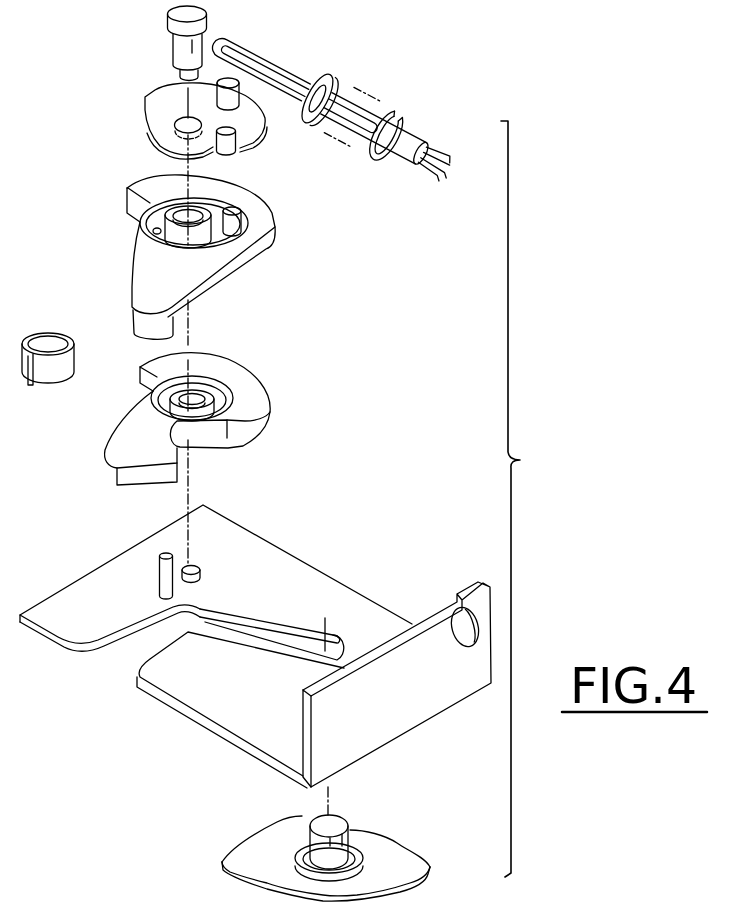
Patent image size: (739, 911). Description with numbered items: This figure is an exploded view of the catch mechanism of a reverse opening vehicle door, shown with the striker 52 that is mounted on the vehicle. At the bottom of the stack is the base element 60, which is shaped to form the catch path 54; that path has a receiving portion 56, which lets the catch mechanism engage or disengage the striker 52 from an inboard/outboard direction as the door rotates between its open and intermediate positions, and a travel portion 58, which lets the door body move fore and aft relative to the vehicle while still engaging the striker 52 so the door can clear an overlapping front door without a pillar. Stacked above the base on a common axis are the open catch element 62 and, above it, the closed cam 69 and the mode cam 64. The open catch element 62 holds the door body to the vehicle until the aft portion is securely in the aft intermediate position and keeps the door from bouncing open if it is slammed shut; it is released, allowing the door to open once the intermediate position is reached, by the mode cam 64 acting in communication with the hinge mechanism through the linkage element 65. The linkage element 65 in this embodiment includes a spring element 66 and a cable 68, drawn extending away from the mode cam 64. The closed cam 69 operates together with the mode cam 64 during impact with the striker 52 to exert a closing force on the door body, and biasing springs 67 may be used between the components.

The striker 52 is at (345, 843).
The catch path 54 is at (203, 630).
The receiving portion 56 is at (132, 655).
The travel portion 58 is at (285, 647).
The base element 60 is at (432, 703).
The open catch element 62 is at (255, 385).
The mode cam 64 is at (264, 132).
The linkage element 65 is at (389, 162).
The spring element 66 is at (365, 115).
The biasing springs 67 is at (67, 368).
The cable 68 is at (435, 160).
The closed cam 69 is at (272, 232).